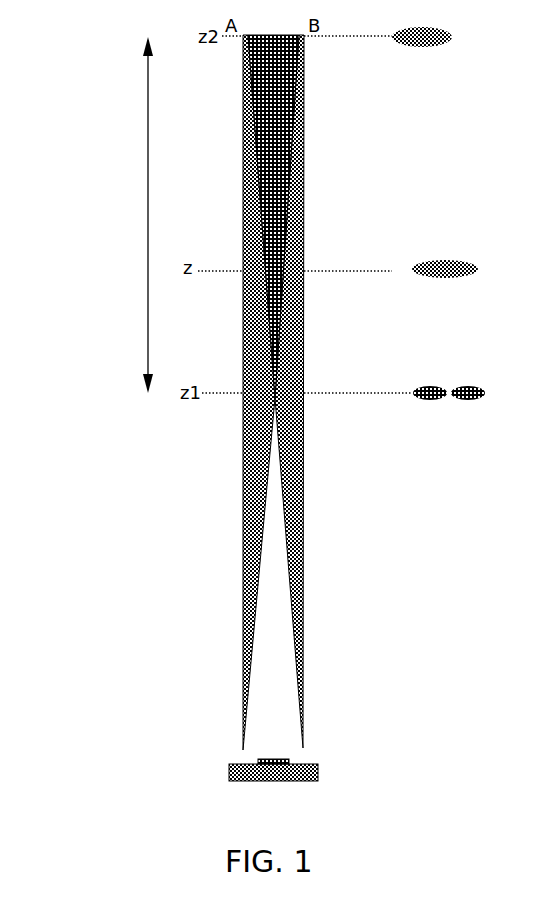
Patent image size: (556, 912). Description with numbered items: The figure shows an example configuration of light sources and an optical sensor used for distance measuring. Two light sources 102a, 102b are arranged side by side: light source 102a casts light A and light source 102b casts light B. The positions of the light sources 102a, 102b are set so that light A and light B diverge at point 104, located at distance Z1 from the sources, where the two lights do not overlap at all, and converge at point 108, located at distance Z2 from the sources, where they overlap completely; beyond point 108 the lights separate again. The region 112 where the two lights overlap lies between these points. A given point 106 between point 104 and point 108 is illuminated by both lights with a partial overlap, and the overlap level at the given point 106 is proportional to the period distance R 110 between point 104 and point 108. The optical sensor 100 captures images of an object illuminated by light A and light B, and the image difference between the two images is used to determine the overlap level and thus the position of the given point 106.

The optical sensor 100 is at (318, 781).
The light source 102a is at (243, 749).
The light source 102b is at (303, 749).
The point 104 is at (277, 390).
The given point 106 is at (278, 268).
The point 108 is at (305, 37).
The period distance R 110 is at (146, 170).
The beam overlap region 112 is at (304, 148).